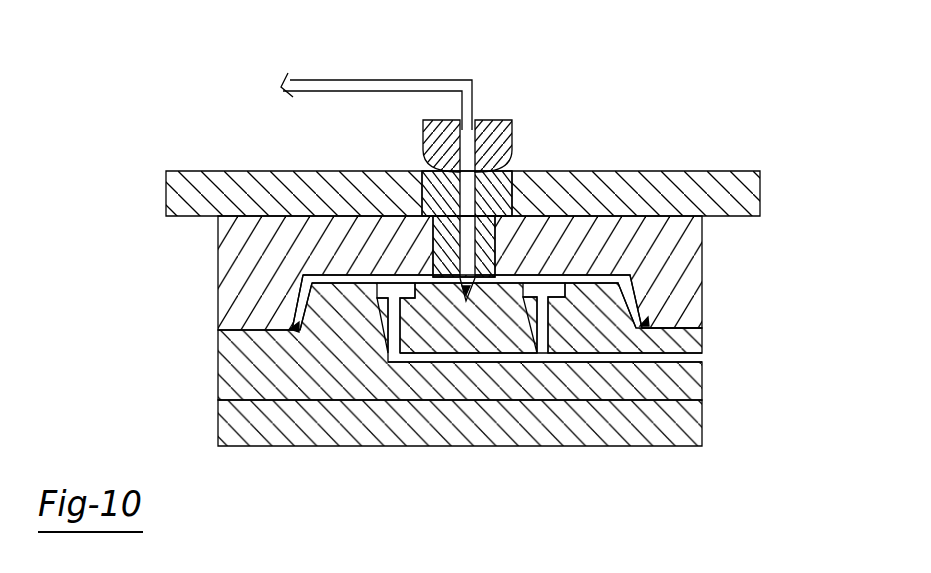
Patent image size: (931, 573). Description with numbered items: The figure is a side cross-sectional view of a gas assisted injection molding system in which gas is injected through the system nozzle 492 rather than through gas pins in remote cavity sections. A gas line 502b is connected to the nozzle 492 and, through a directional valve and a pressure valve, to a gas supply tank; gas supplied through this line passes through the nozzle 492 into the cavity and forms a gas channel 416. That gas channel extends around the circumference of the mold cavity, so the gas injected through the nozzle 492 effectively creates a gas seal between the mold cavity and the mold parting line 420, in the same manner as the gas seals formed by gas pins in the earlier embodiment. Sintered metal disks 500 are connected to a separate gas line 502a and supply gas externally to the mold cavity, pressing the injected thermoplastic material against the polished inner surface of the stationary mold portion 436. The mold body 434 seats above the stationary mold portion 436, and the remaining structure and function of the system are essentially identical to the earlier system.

The gas channel 416 is at (468, 303).
The mold parting line 420 is at (218, 330).
The upper housing block 434 is at (232, 268).
The stationary mold portion 436 is at (225, 373).
The system nozzle 492 is at (506, 135).
The sintered metal disks 500 is at (388, 290).
The gas line 502a is at (697, 358).
The gas line 502b is at (343, 80).